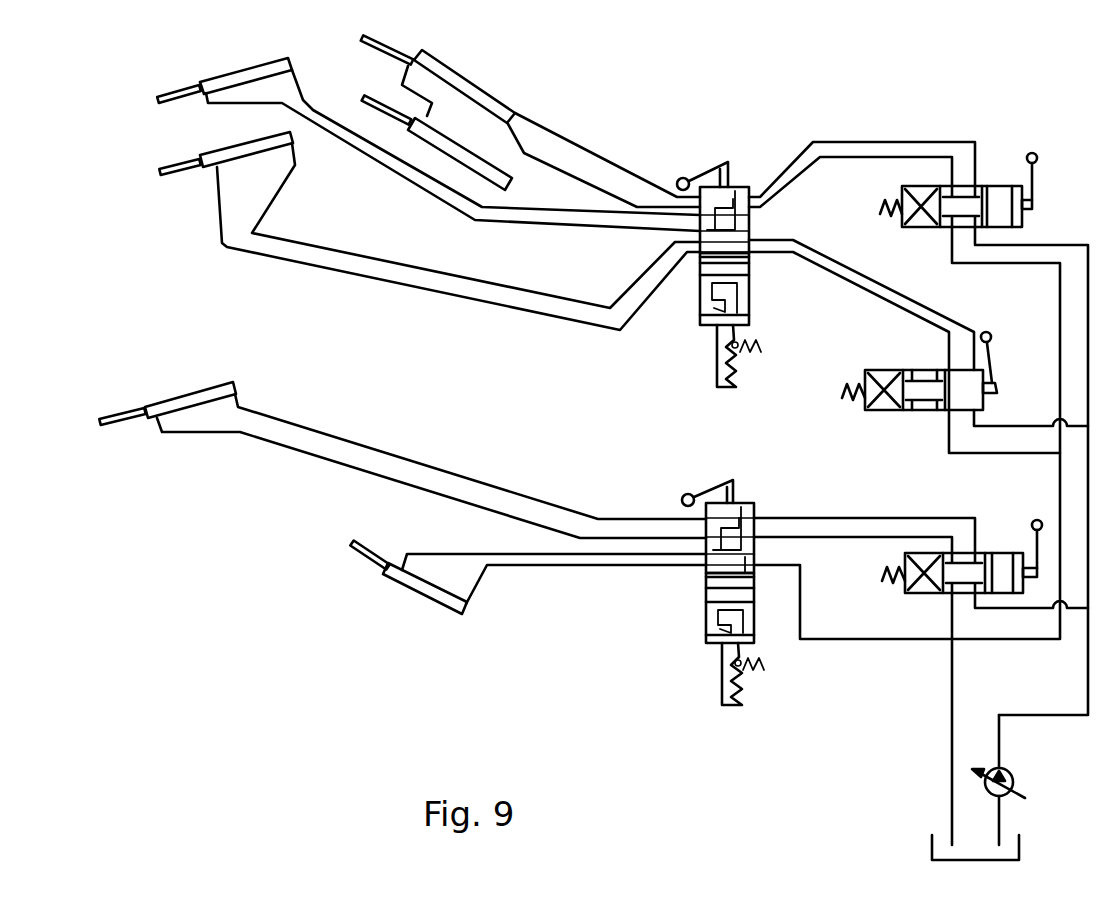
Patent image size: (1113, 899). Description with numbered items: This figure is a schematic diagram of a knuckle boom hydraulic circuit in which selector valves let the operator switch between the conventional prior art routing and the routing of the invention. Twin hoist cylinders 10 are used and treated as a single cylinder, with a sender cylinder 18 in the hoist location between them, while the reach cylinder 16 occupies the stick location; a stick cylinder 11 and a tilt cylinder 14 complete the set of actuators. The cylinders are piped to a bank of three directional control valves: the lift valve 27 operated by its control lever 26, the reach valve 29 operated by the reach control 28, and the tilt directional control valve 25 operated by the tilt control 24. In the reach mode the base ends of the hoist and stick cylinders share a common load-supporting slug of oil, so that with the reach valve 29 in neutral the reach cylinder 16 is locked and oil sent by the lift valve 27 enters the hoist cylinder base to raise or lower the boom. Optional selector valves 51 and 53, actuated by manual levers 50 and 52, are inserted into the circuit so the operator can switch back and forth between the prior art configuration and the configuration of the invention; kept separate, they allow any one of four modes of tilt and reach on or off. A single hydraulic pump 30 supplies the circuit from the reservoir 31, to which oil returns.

The hoist cylinder 10 is at (445, 118).
The stick cylinder 11 is at (243, 70).
The tilt cylinder 14 is at (211, 382).
The reach cylinder 16 is at (240, 165).
The sender cylinder 18 is at (418, 592).
The tilt control 24 is at (1032, 527).
The tilt directional control valve 25 is at (920, 595).
The control lever 26 is at (1037, 185).
The lift valve 27 is at (918, 230).
The reach control 28 is at (1006, 316).
The reach valve 29 is at (880, 410).
The hydraulic pump 30 is at (1005, 796).
The reservoir 31 is at (930, 850).
The manual lever 50 is at (700, 167).
The selector valve 51 is at (700, 325).
The manual lever 52 is at (717, 485).
The selector valve 53 is at (706, 608).